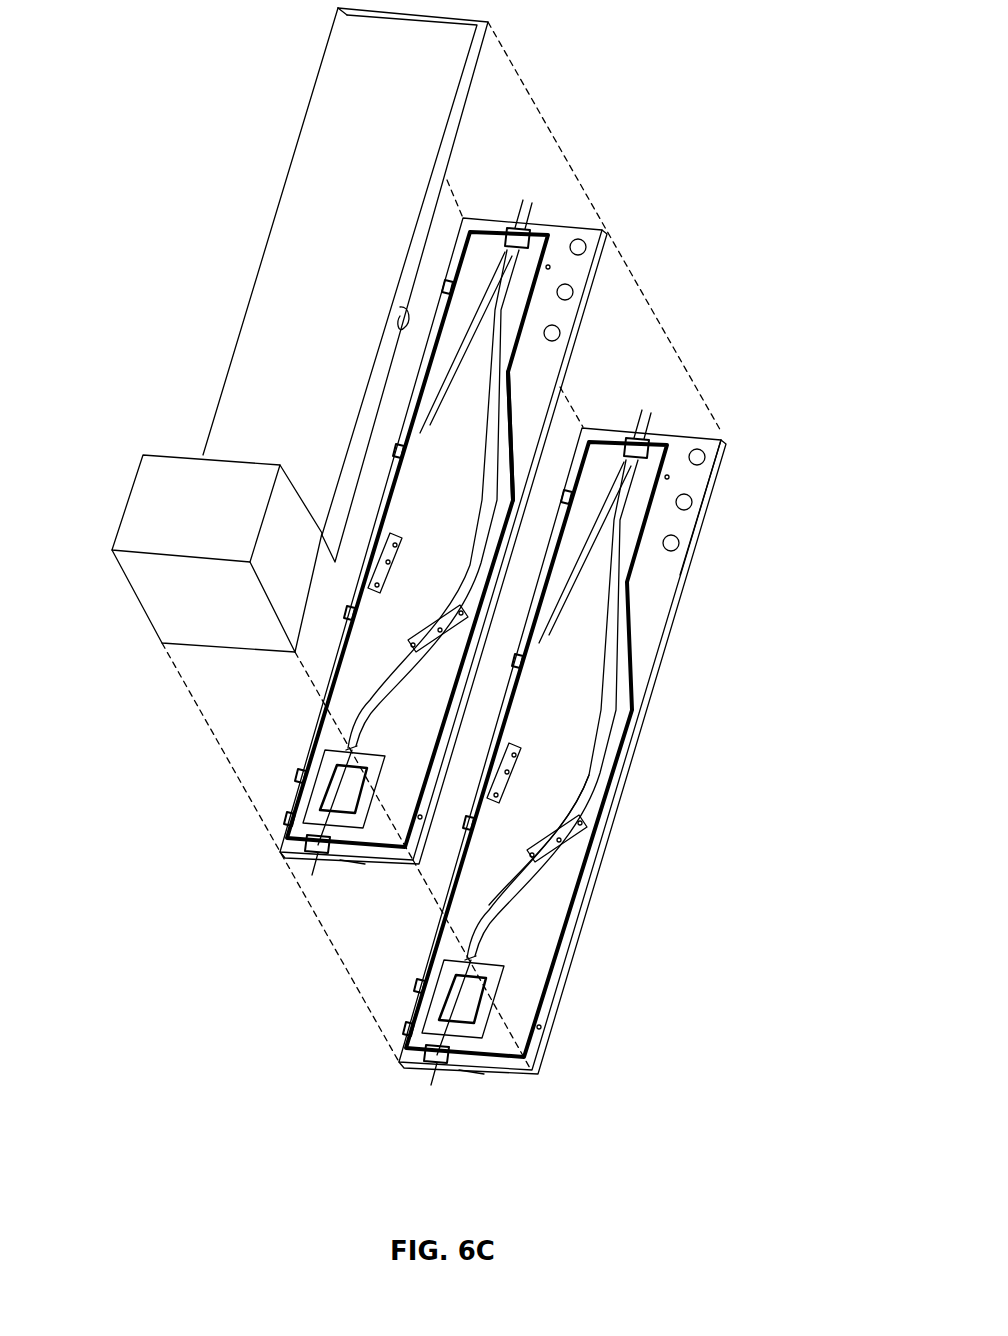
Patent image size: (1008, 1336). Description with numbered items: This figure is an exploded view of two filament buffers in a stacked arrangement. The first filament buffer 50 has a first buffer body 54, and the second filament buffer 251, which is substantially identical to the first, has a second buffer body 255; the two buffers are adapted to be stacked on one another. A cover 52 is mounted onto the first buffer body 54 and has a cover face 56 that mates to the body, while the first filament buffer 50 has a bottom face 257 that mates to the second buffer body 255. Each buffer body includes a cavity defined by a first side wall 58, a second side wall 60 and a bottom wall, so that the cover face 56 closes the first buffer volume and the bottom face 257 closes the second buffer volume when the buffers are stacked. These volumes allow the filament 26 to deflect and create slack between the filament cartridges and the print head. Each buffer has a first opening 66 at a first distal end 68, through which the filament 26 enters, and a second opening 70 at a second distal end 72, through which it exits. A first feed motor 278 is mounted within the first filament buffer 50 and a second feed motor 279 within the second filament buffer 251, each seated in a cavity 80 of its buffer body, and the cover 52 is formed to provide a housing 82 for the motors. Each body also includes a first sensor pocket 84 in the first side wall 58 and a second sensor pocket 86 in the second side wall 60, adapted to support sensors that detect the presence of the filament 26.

The cover 52 is at (313, 143).
The cover face 56 is at (400, 312).
The housing 82 is at (157, 597).
The first buffer body 54 is at (597, 283).
The second distal end 72 is at (587, 228).
The first filament buffer 50 is at (384, 473).
The first side wall 58 is at (410, 512).
The second filament buffer 251 is at (500, 495).
The second buffer body 255 is at (684, 575).
The second opening 70 is at (524, 231).
The second side wall 60 is at (612, 704).
The bottom face 257 is at (510, 900).
The filament 26 is at (485, 575).
The cavity 80 is at (333, 803).
The first opening 66 is at (313, 856).
The first distal end 68 is at (365, 865).
The first feed motor 278 is at (288, 818).
The second feed motor 279 is at (407, 1028).
The first sensor pocket 84 is at (390, 540).
The second sensor pocket 86 is at (520, 765).